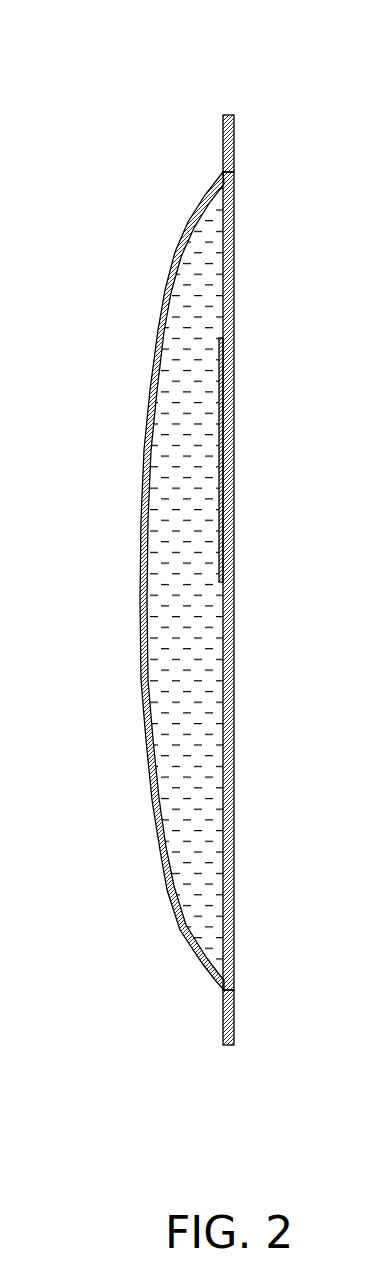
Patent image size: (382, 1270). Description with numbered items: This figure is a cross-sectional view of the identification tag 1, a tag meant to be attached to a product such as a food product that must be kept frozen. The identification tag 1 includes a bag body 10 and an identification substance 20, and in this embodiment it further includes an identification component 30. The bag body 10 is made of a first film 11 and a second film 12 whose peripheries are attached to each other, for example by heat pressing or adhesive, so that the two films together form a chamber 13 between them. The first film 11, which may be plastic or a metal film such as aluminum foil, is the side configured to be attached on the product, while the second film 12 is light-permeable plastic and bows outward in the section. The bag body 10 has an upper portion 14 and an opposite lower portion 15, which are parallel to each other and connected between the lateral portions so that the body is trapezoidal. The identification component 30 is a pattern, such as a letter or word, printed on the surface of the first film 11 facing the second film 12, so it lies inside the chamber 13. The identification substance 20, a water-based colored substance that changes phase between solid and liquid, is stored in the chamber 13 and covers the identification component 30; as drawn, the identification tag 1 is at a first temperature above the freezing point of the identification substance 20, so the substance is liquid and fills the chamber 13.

The identification tag 1 is at (60, 30).
The bag body 10 is at (112, 408).
The first film 11 is at (235, 600).
The second film 12 is at (140, 580).
The chamber 13 is at (200, 820).
The upper portion 14 is at (226, 100).
The lower portion 15 is at (227, 1062).
The identification substance 20 is at (193, 725).
The identification component 30 is at (225, 405).